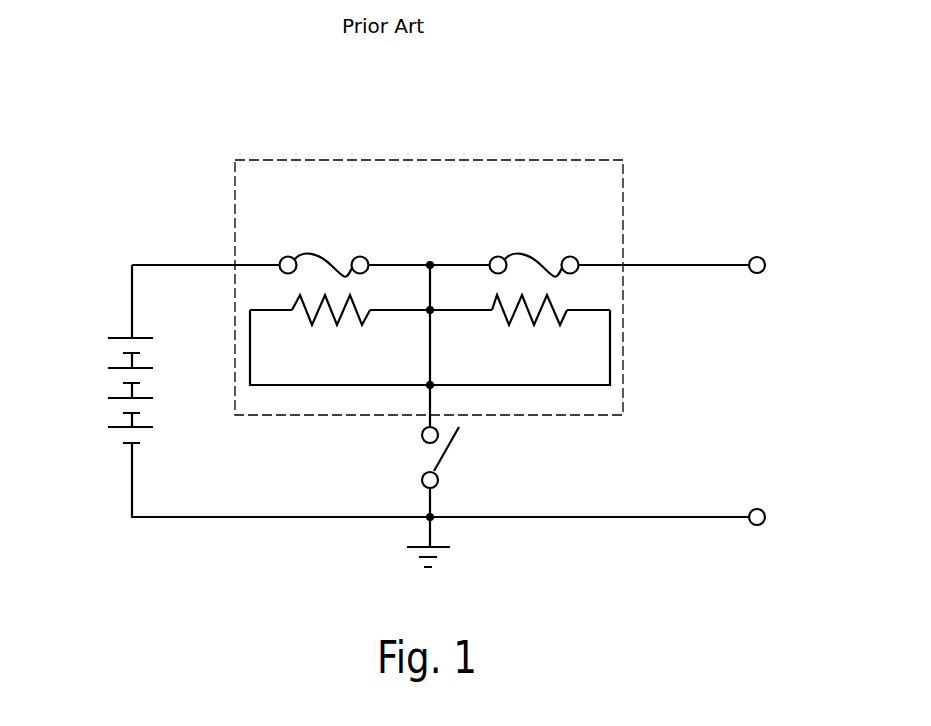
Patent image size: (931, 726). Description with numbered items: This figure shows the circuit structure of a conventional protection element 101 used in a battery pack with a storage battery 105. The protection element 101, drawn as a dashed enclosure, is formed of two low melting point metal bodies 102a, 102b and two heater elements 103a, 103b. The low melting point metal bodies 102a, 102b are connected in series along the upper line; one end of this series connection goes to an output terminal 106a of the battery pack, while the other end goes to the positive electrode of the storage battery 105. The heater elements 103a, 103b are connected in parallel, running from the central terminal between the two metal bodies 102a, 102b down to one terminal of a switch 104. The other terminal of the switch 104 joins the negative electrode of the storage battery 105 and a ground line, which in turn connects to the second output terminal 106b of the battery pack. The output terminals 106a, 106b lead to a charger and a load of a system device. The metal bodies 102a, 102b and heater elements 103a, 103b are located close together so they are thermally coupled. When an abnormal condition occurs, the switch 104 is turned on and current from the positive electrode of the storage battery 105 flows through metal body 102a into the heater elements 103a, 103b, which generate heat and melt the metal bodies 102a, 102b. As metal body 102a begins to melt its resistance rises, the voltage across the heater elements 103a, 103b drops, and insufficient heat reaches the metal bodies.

The protection element 101 is at (623, 180).
The low melting point metal body 102a is at (343, 273).
The low melting point metal body 102b is at (543, 273).
The heater element 103a is at (333, 318).
The heater element 103b is at (528, 318).
The switch 104 is at (451, 449).
The storage battery 105 is at (100, 338).
The output terminal 106a is at (762, 256).
The output terminal 106b is at (762, 508).